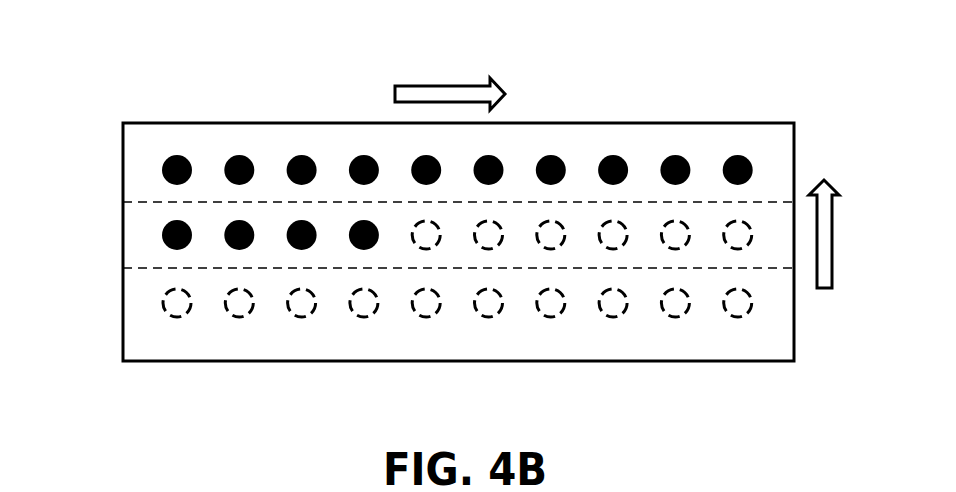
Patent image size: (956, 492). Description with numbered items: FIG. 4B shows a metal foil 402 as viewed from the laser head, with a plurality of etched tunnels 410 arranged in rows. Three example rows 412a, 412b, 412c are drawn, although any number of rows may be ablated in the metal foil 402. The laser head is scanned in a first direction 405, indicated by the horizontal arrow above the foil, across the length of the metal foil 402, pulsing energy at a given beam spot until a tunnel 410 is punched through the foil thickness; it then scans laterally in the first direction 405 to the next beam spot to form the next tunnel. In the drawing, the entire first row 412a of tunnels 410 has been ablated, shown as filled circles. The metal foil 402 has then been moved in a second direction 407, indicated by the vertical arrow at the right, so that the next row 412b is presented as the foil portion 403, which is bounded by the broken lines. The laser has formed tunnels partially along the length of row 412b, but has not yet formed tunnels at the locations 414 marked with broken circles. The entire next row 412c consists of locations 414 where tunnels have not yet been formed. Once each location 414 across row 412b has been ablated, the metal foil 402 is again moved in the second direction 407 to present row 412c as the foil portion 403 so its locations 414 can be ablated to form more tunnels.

The metal foil 402 is at (710, 122).
The foil portion 403 is at (748, 202).
The first direction 405 is at (458, 87).
The second direction 407 is at (832, 242).
The etched tunnel 410 is at (181, 155).
The first row 412a is at (133, 176).
The row 412b is at (133, 241).
The next row 412c is at (133, 309).
The location 414 is at (740, 318).